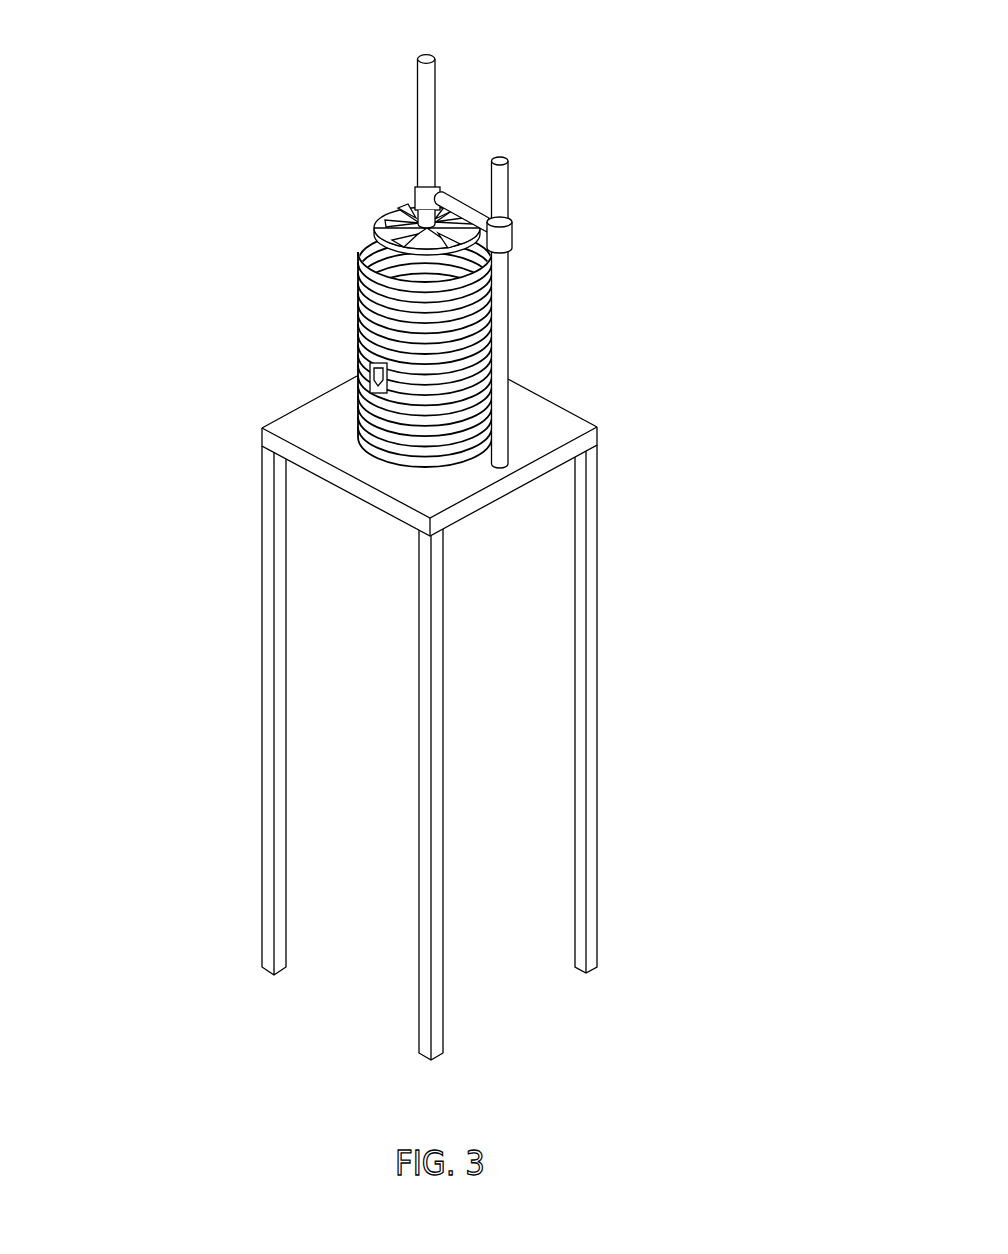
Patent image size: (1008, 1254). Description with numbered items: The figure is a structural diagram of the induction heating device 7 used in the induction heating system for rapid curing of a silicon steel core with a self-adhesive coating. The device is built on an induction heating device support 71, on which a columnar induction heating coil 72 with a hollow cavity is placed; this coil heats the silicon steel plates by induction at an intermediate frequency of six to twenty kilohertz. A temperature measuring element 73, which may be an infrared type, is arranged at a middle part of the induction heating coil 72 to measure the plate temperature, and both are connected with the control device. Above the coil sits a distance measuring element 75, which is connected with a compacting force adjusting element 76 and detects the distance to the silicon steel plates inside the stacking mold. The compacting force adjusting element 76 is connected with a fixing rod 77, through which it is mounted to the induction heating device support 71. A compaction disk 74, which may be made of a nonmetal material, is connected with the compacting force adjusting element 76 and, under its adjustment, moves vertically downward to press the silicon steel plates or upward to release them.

The induction heating device 7 is at (440, 33).
The induction heating device support 71 is at (552, 430).
The induction heating coil 72 is at (358, 308).
The temperature measuring element 73 is at (370, 380).
The compaction disk 74 is at (380, 218).
The distance measuring element 75 is at (414, 190).
The compacting force adjusting element 76 is at (438, 190).
The fixing rod 77 is at (509, 338).